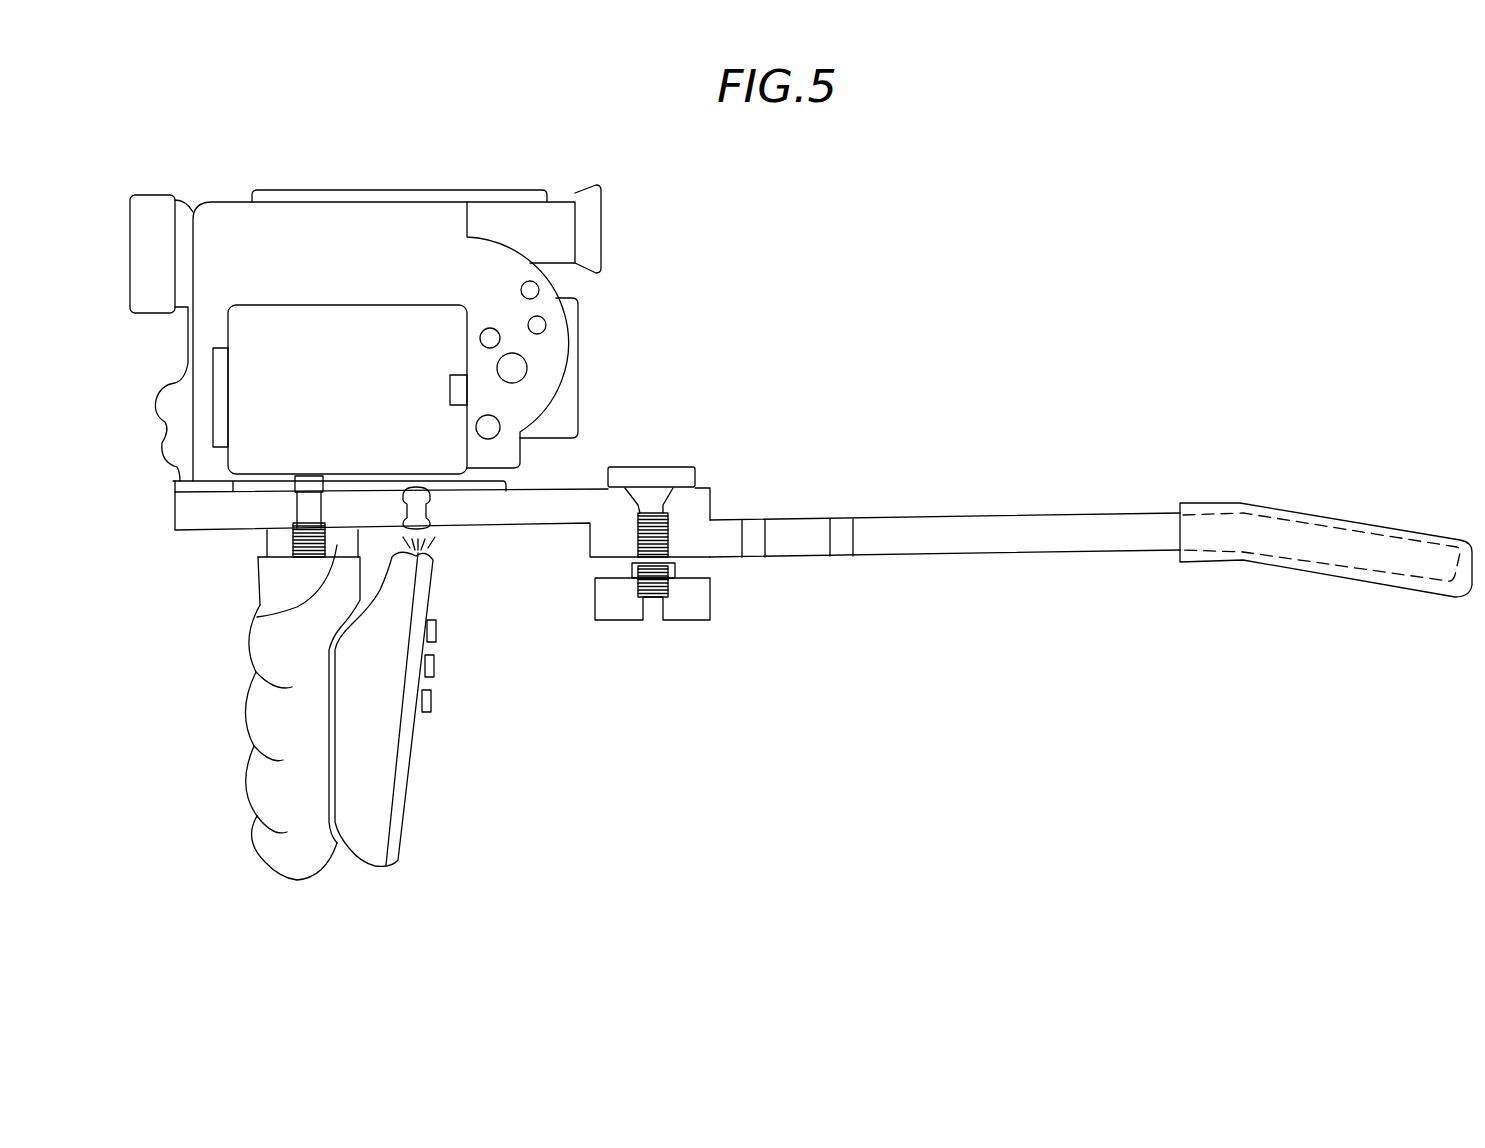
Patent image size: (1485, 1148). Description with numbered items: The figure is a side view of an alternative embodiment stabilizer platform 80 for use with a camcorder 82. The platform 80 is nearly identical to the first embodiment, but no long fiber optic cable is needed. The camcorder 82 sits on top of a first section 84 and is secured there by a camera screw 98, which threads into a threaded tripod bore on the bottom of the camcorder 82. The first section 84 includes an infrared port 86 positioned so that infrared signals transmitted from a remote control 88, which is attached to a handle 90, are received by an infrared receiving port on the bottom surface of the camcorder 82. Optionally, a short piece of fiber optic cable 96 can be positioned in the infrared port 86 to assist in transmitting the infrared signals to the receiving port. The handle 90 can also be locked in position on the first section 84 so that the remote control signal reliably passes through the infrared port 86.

The stabilizer platform 80 is at (1010, 432).
The camcorder 82 is at (353, 218).
The first section 84 is at (563, 507).
The infrared port 86 is at (415, 515).
The remote control 88 is at (367, 778).
The handle 90 is at (295, 850).
The fiber optic cable 96 is at (433, 520).
The camera screw 98 is at (257, 615).